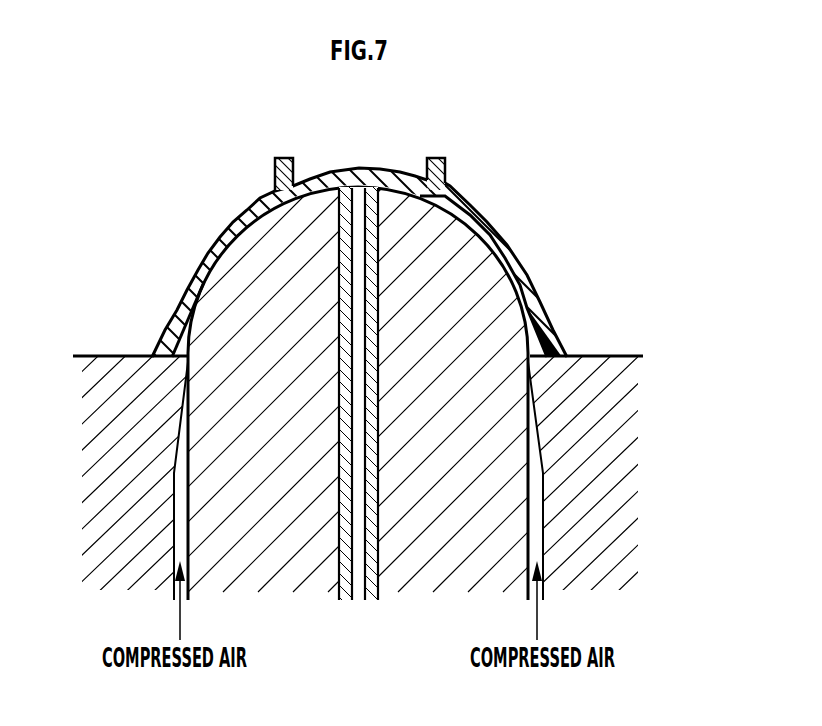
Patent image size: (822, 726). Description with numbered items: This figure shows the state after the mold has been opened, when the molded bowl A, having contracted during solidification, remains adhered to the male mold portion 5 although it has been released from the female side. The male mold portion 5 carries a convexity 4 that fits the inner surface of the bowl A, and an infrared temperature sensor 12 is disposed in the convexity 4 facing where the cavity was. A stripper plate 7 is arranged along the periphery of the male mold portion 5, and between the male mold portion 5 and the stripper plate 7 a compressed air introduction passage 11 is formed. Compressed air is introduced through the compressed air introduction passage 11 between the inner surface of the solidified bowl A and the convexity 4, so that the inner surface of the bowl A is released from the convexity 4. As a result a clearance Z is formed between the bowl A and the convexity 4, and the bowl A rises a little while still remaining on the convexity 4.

The convexity 4 is at (503, 258).
The male mold portion 5 is at (274, 558).
The stripper plate 7 is at (125, 452).
The compressed air introduction passage 11 is at (182, 532).
The infrared temperature sensor 12 is at (378, 558).
The bowl A is at (373, 167).
The clearance Z is at (183, 350).